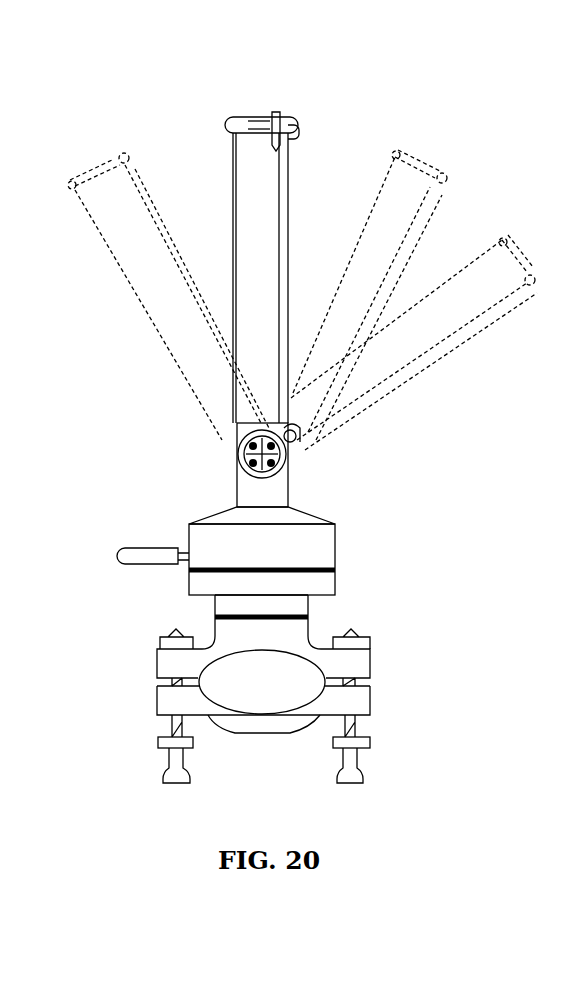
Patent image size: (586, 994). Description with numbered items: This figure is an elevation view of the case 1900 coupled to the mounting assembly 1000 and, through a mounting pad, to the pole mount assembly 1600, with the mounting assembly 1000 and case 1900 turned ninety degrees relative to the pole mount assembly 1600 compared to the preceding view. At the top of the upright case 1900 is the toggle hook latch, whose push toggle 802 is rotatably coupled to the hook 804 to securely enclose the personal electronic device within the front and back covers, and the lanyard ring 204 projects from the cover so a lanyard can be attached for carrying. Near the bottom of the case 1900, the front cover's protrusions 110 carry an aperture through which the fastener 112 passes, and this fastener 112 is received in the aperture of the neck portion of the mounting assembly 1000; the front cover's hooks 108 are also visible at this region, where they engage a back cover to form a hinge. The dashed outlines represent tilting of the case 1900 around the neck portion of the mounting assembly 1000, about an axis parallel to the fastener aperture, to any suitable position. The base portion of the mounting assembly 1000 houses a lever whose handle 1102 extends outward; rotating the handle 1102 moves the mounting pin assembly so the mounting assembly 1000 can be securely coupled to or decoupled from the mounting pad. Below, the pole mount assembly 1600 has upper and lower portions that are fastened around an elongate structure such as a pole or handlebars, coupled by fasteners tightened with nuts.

The case 1900 is at (258, 251).
The push toggle 802 is at (237, 122).
The lanyard ring 204 is at (280, 115).
The hook 804 is at (300, 130).
The protrusions 110 is at (237, 440).
The hooks 108 is at (294, 440).
The fastener 112 is at (264, 465).
The mounting assembly 1000 is at (246, 557).
The handle 1102 is at (140, 568).
The pole mount assembly 1600 is at (138, 667).